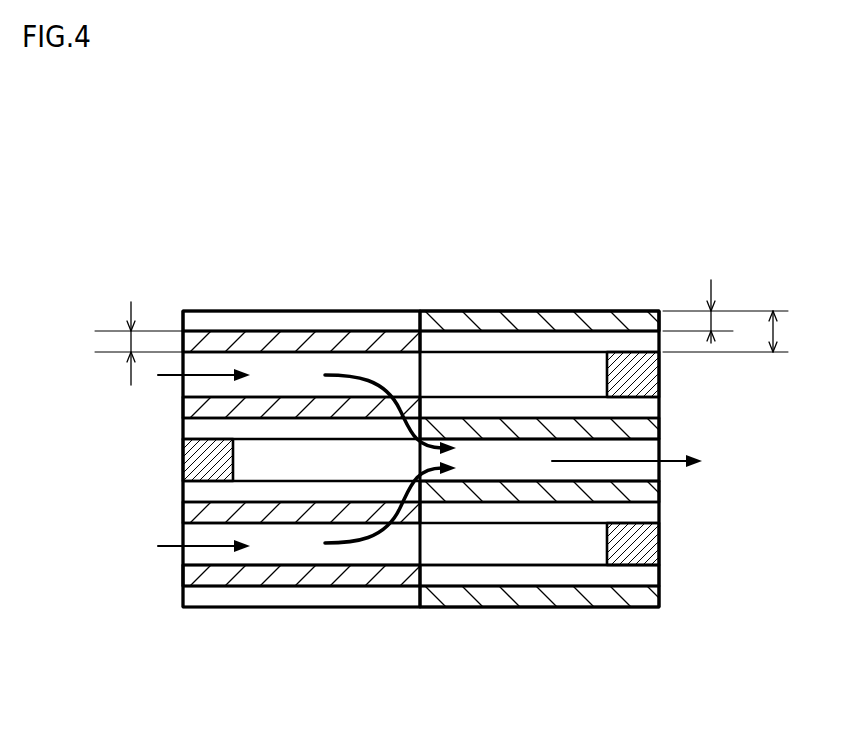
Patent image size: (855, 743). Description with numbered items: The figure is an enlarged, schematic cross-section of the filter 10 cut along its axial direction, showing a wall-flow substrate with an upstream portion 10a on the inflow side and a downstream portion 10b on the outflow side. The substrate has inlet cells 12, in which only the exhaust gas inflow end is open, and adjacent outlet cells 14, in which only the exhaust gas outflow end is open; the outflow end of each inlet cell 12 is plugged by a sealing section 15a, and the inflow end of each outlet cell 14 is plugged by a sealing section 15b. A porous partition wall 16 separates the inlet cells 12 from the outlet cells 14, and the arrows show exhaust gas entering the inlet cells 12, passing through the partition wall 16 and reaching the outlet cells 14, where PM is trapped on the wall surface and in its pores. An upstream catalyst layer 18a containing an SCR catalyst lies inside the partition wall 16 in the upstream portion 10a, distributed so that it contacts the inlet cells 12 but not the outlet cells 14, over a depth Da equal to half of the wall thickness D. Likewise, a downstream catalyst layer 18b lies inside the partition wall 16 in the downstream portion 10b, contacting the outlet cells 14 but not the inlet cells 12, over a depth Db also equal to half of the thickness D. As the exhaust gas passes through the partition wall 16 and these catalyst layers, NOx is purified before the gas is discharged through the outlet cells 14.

The filter 10 is at (669, 170).
The upstream portion 10a is at (263, 311).
The downstream portion 10b is at (601, 311).
The inlet cells 12 is at (403, 362).
The outlet cells 14 is at (520, 462).
The sealing section 15a is at (183, 453).
The sealing section 15b is at (648, 382).
The porous partition wall 16 is at (482, 395).
The upstream catalyst layer 18a is at (207, 342).
The downstream catalyst layer 18b is at (562, 322).
The thickness of the upstream catalyst layer Da is at (131, 345).
The thickness of the downstream catalyst layer Db is at (710, 322).
The thickness of the partition wall D is at (789, 331).